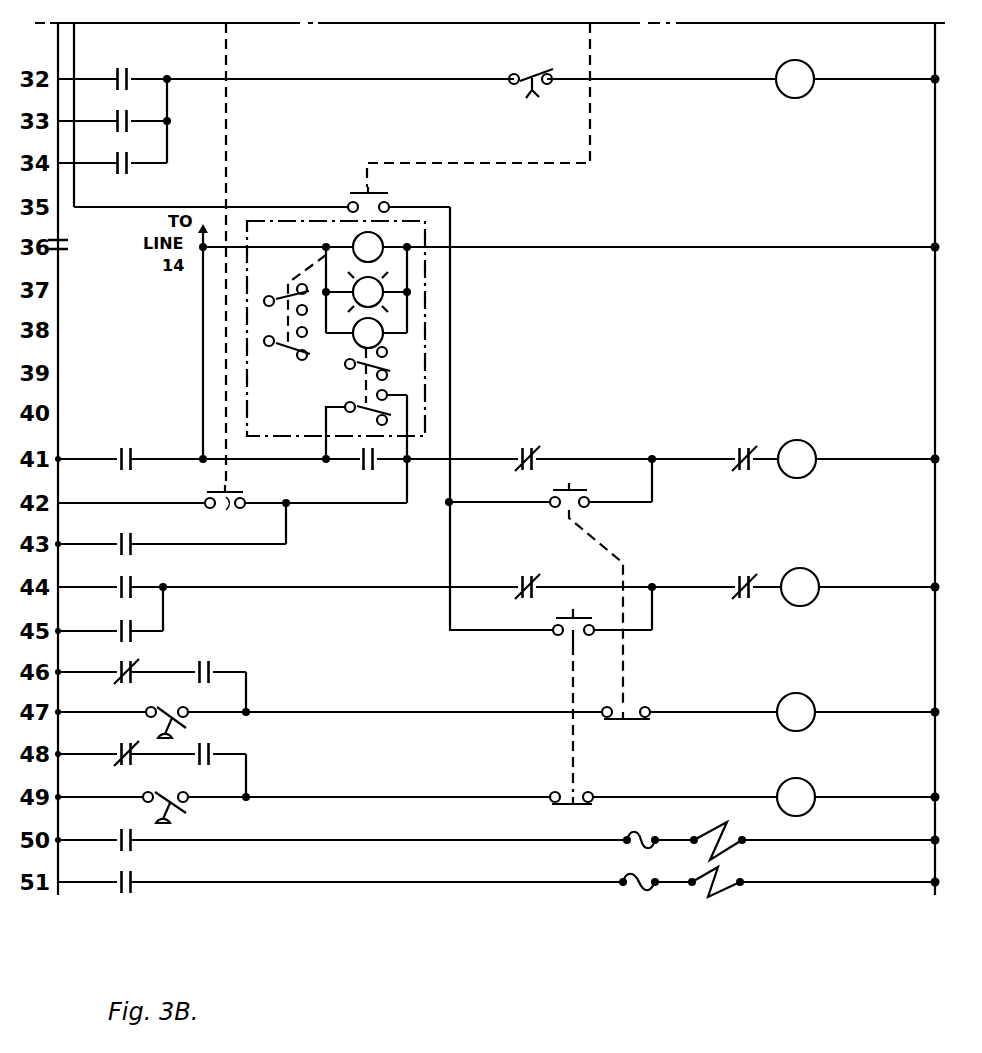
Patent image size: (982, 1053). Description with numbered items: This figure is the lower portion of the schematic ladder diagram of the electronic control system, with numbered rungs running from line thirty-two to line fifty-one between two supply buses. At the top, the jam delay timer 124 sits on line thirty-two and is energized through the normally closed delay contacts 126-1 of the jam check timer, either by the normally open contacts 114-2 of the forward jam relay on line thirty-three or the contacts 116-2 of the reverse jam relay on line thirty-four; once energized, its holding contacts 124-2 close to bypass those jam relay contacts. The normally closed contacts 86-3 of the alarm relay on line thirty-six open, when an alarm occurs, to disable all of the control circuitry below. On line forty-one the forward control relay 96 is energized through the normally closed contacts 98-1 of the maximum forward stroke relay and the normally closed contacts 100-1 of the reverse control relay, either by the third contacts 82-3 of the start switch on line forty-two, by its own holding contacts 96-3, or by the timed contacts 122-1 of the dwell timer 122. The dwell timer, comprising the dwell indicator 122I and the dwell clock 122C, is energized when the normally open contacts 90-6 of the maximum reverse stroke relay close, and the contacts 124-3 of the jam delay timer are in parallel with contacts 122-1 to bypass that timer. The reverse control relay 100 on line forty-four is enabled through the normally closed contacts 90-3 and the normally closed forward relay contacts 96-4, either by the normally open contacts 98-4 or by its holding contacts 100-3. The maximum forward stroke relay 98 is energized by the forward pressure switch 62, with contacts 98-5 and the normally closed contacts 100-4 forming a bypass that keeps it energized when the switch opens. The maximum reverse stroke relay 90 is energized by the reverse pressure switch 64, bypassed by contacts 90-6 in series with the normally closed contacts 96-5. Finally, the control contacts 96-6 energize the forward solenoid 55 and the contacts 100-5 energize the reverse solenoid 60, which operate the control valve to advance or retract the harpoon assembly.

The holding contacts of the jam delay timer 124-2 is at (146, 58).
The contacts of the forward jam relay 114-2 is at (133, 113).
The contacts of the reverse jam relay 116-2 is at (118, 177).
The delay contacts of the jam check timer 126-1 is at (530, 72).
The jam delay timer 124 is at (790, 72).
The contacts of the alarm relay 86-3 is at (72, 243).
The dwell timer 122 is at (392, 340).
The dwell indicator 122I is at (383, 285).
The dwell clock 122C is at (380, 336).
The timed contacts of the dwell clock 122-1 is at (352, 410).
The contacts of the maximum reverse stroke relay 90-6 is at (126, 450).
The contacts of the jam delay timer 124-3 is at (362, 472).
The contacts of the maximum forward stroke relay 98-1 is at (530, 445).
The contacts of the reverse control relay 100-1 is at (745, 445).
The forward control relay 96 is at (800, 450).
The third contacts of the start switch 82-3 is at (196, 283).
The holding contacts of the forward control relay 96-3 is at (130, 556).
The holding contacts of the reverse control relay 100-3 is at (133, 595).
The contacts of the maximum reverse stroke relay 90-3 is at (527, 572).
The forward relay contacts 96-4 is at (750, 570).
The reverse control relay 100 is at (803, 582).
The contacts of the maximum forward stroke relay 98-4 is at (133, 633).
The contacts of the reverse control relay 100-4 is at (143, 686).
The contacts of the maximum forward stroke relay 98-5 is at (215, 665).
The forward pressure switch 62 is at (163, 707).
The maximum forward stroke relay 98 is at (800, 705).
The forward relay contacts 96-5 is at (118, 752).
The reverse pressure switch 64 is at (170, 792).
The maximum reverse stroke relay 90 is at (800, 790).
The control contacts of the forward control relay 96-6 is at (133, 846).
The contacts of the reverse control relay 100-5 is at (133, 888).
The forward solenoid 55 is at (725, 822).
The reverse solenoid 60 is at (712, 893).